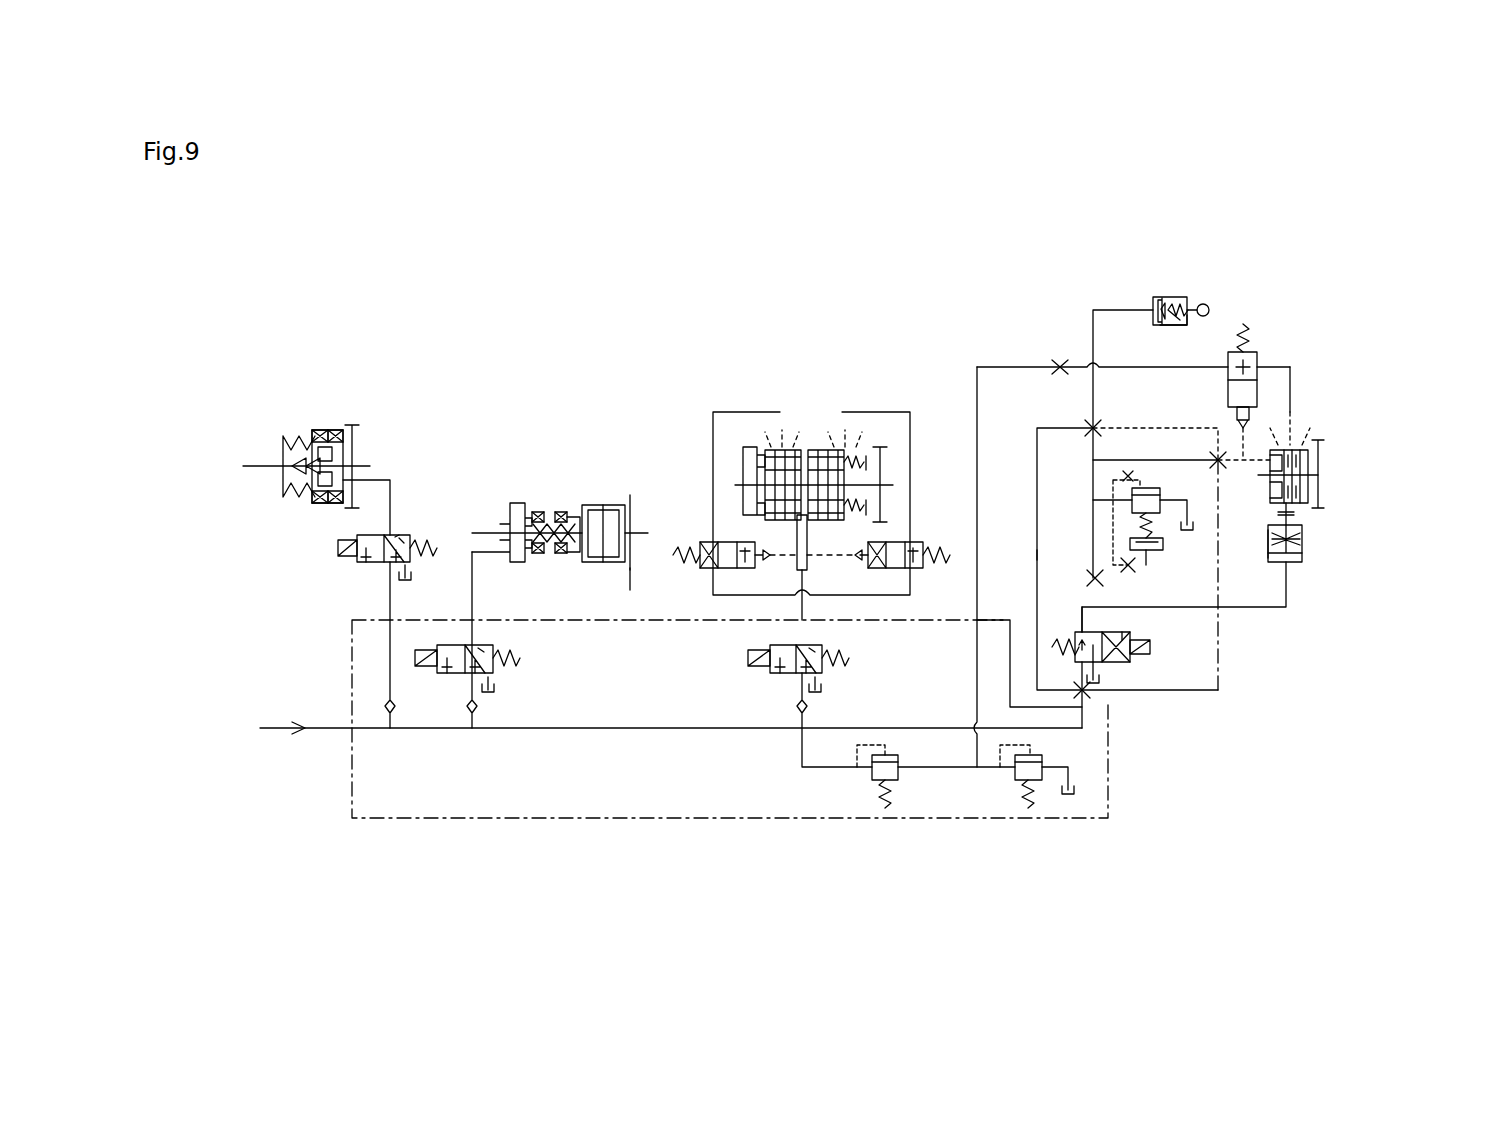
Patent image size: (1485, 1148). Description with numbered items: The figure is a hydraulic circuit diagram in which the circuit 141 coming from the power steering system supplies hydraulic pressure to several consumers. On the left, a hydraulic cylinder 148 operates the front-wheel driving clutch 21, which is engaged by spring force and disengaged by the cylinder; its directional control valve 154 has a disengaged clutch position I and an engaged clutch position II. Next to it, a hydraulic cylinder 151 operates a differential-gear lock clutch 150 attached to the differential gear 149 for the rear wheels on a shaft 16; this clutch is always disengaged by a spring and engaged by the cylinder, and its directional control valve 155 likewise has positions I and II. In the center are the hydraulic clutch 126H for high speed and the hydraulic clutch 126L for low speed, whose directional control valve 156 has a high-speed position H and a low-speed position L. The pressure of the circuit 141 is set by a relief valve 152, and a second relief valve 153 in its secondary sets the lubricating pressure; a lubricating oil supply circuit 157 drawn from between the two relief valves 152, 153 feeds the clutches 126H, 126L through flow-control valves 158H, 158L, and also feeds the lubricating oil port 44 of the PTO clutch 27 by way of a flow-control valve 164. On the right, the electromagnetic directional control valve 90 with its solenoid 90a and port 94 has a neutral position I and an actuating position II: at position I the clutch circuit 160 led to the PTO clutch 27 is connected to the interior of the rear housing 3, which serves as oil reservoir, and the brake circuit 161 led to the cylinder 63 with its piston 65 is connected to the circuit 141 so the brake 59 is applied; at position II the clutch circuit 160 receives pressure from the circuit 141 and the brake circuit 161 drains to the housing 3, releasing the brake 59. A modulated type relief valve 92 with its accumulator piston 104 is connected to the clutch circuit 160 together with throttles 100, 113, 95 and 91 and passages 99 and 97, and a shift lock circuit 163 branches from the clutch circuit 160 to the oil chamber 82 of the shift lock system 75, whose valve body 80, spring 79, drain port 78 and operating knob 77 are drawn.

The circuit 141 is at (330, 733).
The front-wheel driving clutch 21 is at (338, 418).
The hydraulic cylinder 148 is at (335, 448).
The directional control valve 154 is at (410, 530).
The hydraulic cylinder 151 is at (510, 505).
The differential-gear lock clutch 150 is at (545, 500).
The differential gear 149 is at (605, 500).
The transmission shaft 16 is at (628, 575).
The hydraulic clutch for high speed 126H is at (770, 450).
The hydraulic clutch for low speed 126L is at (825, 450).
The flow-control valve 158H is at (705, 540).
The flow-control valve 158L is at (923, 542).
The directional control valve 155 is at (498, 648).
The directional control valve 156 is at (825, 644).
The lubricating oil supply circuit 157 is at (975, 678).
The relief valve 152 is at (870, 785).
The relief valve 153 is at (1045, 760).
The lubricating oil port 44 is at (1056, 373).
The shift lock circuit 163 is at (1090, 333).
The shift lock system 75 is at (1173, 290).
The valve body 80 is at (1155, 295).
The oil chamber 82 is at (1162, 322).
The valve spring 79 is at (1182, 300).
The drain port 78 is at (1182, 325).
The operating knob 77 is at (1210, 308).
The flow-control valve 164 is at (1258, 360).
The PTO clutch 27 is at (1310, 440).
The brake 59 is at (1302, 512).
The cylinder for brakes 63 is at (1303, 545).
The brake cylinder 65 is at (1268, 535).
The brake circuit 161 is at (1265, 612).
The clutch circuit 160 is at (1090, 545).
The throttle 100 is at (1098, 425).
The pilot oil passage 99 is at (1215, 455).
The modulated type relief valve 92 is at (1158, 492).
The accumulator piston 104 is at (1160, 552).
The throttle 113 is at (1128, 581).
The rear housing 3 is at (1030, 660).
The throttle 95 is at (1080, 625).
The electromagnetic directional control valve 90 is at (1120, 660).
The solenoid of switching valve 90a is at (1155, 652).
The valve port 94 is at (1130, 638).
The throttle 91 is at (1092, 700).
The oil passage 97 is at (1060, 575).